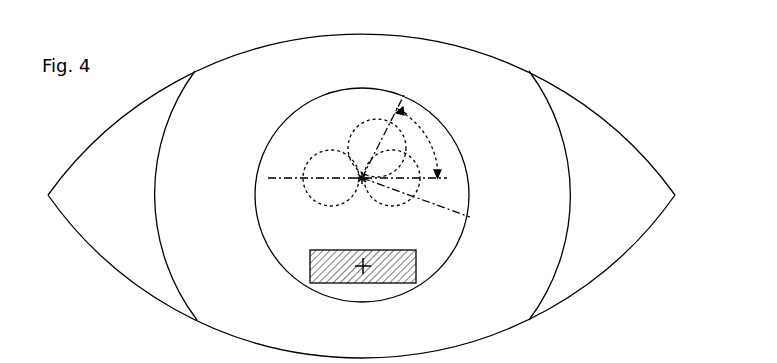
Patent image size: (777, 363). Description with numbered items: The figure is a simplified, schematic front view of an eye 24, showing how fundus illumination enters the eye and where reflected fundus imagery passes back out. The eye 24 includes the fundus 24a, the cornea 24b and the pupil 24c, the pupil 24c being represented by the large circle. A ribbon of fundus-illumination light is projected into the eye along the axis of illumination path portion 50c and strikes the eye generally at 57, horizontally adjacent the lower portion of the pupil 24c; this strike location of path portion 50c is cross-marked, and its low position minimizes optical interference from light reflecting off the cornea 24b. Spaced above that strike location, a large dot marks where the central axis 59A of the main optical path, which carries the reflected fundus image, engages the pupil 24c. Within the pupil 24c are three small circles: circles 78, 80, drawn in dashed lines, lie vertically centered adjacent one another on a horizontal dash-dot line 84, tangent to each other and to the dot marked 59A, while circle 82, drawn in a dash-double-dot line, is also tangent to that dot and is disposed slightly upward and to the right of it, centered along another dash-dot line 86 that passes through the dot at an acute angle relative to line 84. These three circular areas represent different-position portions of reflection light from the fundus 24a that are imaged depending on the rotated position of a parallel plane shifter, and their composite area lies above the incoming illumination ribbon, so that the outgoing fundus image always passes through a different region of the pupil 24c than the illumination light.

The eye 24 is at (477, 51).
The fundus 24a is at (291, 158).
The cornea 24b is at (412, 106).
The pupil 24c is at (258, 208).
The horizontal dash-dot line 84 is at (437, 177).
The dash-dot line 86 is at (396, 105).
The small circle 80 is at (470, 216).
The small circle 82 is at (367, 121).
The small circle 78 is at (330, 209).
The central axis 59A is at (361, 182).
The fundus-illumination strike location 57 is at (417, 262).
The illumination path portion 50c is at (371, 275).